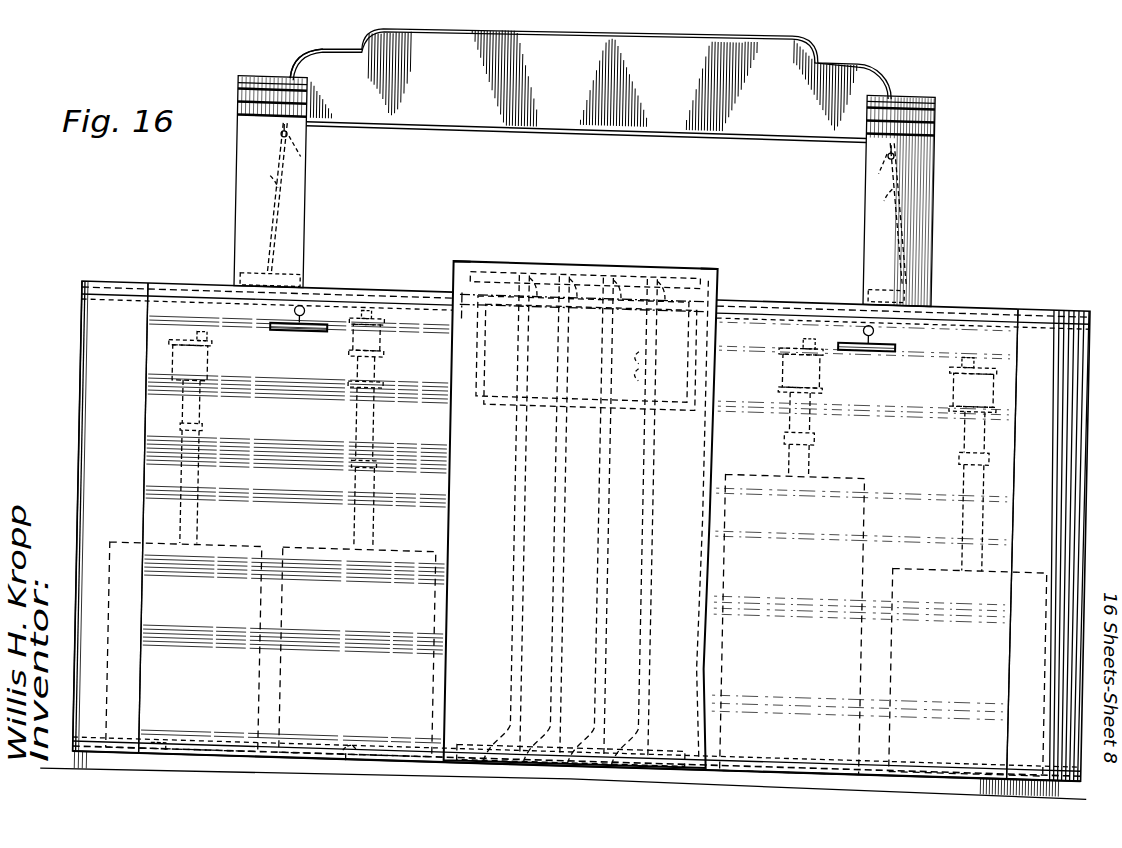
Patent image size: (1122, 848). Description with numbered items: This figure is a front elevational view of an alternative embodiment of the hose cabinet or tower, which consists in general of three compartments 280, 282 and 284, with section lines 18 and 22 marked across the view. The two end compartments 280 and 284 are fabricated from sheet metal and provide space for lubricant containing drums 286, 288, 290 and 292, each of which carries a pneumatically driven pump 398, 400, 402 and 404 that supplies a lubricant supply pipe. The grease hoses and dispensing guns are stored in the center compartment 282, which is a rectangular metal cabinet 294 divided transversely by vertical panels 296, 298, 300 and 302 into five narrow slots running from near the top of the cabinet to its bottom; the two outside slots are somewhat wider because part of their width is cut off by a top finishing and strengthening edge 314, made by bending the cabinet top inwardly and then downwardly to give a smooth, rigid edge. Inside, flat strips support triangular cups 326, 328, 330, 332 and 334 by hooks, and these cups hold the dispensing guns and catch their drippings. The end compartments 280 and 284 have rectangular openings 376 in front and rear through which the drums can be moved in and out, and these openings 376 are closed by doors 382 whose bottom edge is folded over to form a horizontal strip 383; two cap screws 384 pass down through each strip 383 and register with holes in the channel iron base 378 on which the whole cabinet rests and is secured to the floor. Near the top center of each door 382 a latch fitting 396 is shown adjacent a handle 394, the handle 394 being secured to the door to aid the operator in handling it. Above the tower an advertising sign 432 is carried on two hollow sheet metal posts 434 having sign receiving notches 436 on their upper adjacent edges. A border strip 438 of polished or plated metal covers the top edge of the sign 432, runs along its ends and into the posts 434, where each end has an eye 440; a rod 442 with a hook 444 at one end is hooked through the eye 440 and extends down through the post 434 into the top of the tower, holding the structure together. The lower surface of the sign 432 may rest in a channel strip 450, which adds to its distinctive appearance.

The section line 18 is at (55, 295).
The section line 22 is at (323, 262).
The end compartment 280 is at (150, 283).
The center compartment 282 is at (547, 252).
The end compartment 284 is at (948, 285).
The lubricant drum 286 is at (238, 541).
The lubricant drum 288 is at (337, 531).
The lubricant drum 290 is at (840, 455).
The lubricant drum 292 is at (906, 544).
The rectangular metal cabinet 294 is at (654, 250).
The vertical panel 296 is at (497, 752).
The vertical panel 298 is at (556, 750).
The vertical panel 300 is at (608, 752).
The vertical panel 302 is at (665, 748).
The top finishing and strengthening edge 314 is at (454, 250).
The triangular cup 326 is at (478, 338).
The triangular cup 328 is at (479, 386).
The triangular cup 330 is at (605, 262).
The triangular cup 332 is at (686, 350).
The triangular cup 334 is at (687, 372).
The rectangular opening 376 is at (157, 414).
The base 378 is at (365, 757).
The door 382 is at (157, 333).
The horizontal strip 383 is at (369, 744).
The cap screw 384 is at (169, 742).
The handle 394 is at (320, 326).
The knob 396 is at (296, 306).
The pneumatically driven pump 398 is at (202, 423).
The pneumatically driven pump 400 is at (348, 400).
The pneumatically driven pump 402 is at (795, 389).
The pneumatically driven pump 404 is at (962, 400).
The sign 432 is at (495, 108).
The post 434 is at (236, 148).
The sign receiving notch 436 is at (290, 72).
The border strip 438 is at (332, 48).
The eye 440 is at (278, 131).
The rod 442 is at (272, 176).
The hook 444 is at (296, 156).
The channel strip 450 is at (590, 112).